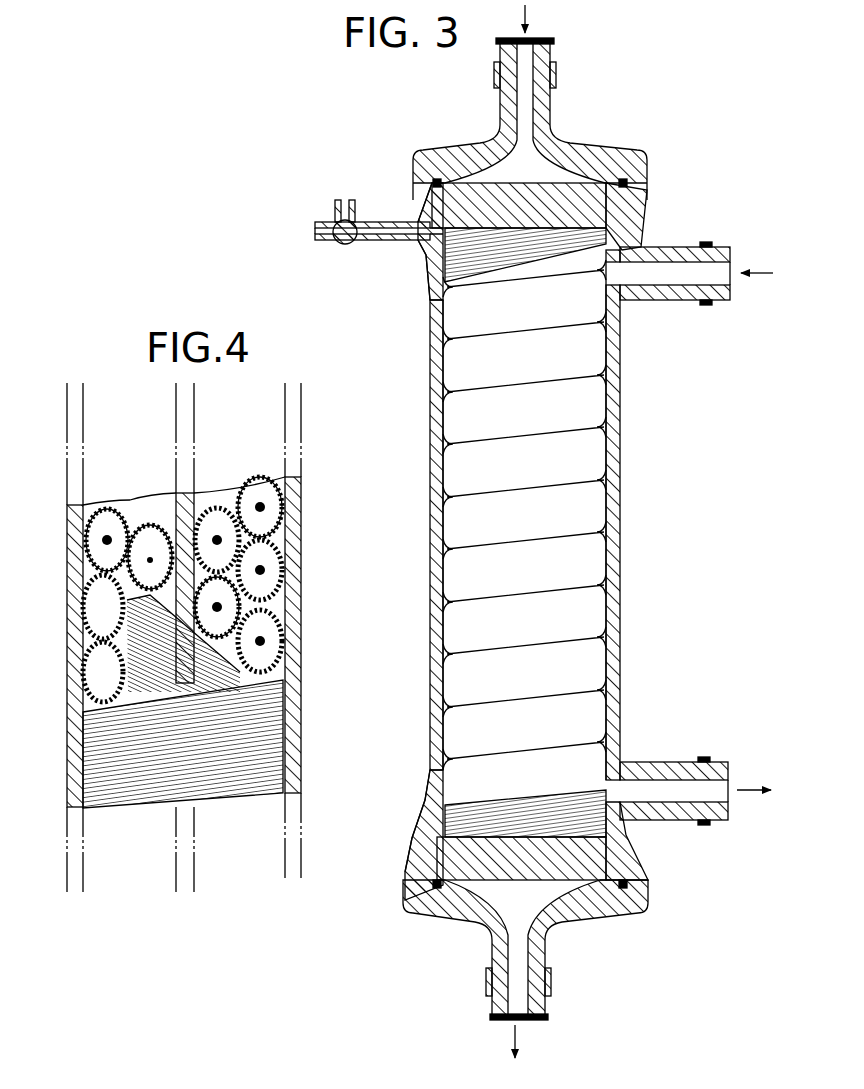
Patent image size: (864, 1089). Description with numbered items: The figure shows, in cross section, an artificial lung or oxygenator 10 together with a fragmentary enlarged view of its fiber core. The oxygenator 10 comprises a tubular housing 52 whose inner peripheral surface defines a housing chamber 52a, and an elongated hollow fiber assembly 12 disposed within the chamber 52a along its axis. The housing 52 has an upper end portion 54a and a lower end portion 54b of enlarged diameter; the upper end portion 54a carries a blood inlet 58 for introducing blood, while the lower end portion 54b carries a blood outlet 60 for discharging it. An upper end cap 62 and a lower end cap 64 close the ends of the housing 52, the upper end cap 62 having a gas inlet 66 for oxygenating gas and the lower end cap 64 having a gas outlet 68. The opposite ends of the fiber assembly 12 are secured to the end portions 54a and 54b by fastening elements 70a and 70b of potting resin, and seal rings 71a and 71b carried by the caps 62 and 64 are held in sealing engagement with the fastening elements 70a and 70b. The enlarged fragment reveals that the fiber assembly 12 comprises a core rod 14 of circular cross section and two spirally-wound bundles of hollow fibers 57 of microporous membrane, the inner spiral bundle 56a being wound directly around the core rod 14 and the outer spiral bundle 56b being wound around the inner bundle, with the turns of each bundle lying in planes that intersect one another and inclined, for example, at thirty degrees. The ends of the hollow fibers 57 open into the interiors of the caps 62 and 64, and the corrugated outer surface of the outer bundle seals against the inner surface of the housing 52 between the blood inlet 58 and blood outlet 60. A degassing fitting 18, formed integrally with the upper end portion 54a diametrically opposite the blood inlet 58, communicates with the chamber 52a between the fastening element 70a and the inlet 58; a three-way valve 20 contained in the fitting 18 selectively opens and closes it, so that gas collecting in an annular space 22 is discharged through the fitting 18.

In FIG. 3, the oxygenator 10 is at (432, 137).
In FIG. 3, the hollow fiber assembly 12 is at (592, 512).
In FIG. 4, the hollow fiber assembly 12 is at (282, 750).
In FIG. 4, the core rod 14 is at (188, 490).
In FIG. 3, the degassing fitting 18 is at (385, 226).
In FIG. 3, the three-way valve 20 is at (333, 244).
In FIG. 3, the annular space 22 is at (420, 252).
In FIG. 3, the tubular housing 52 is at (622, 392).
In FIG. 4, the tubular housing 52 is at (66, 784).
In FIG. 3, the housing chamber 52a is at (610, 460).
In FIG. 3, the upper end portion 54a is at (420, 292).
In FIG. 3, the lower end portion 54b is at (420, 787).
In FIG. 4, the inner spiral bundle 56a is at (140, 546).
In FIG. 3, the outer spiral bundle 56b is at (453, 522).
In FIG. 4, the outer spiral bundle 56b is at (277, 506).
In FIG. 3, the hollow fibers 57 is at (520, 806).
In FIG. 4, the hollow fibers 57 is at (252, 788).
In FIG. 3, the blood inlet 58 is at (722, 301).
In FIG. 3, the blood outlet 60 is at (724, 818).
In FIG. 3, the upper end cap 62 is at (558, 133).
In FIG. 3, the lower end cap 64 is at (490, 938).
In FIG. 3, the gas inlet 66 is at (552, 42).
In FIG. 3, the gas outlet 68 is at (542, 1013).
In FIG. 3, the upper fastening element 70a is at (594, 186).
In FIG. 3, the lower fastening element 70b is at (432, 846).
In FIG. 3, the upper seal ring 71a is at (628, 184).
In FIG. 3, the lower seal ring 71b is at (426, 886).